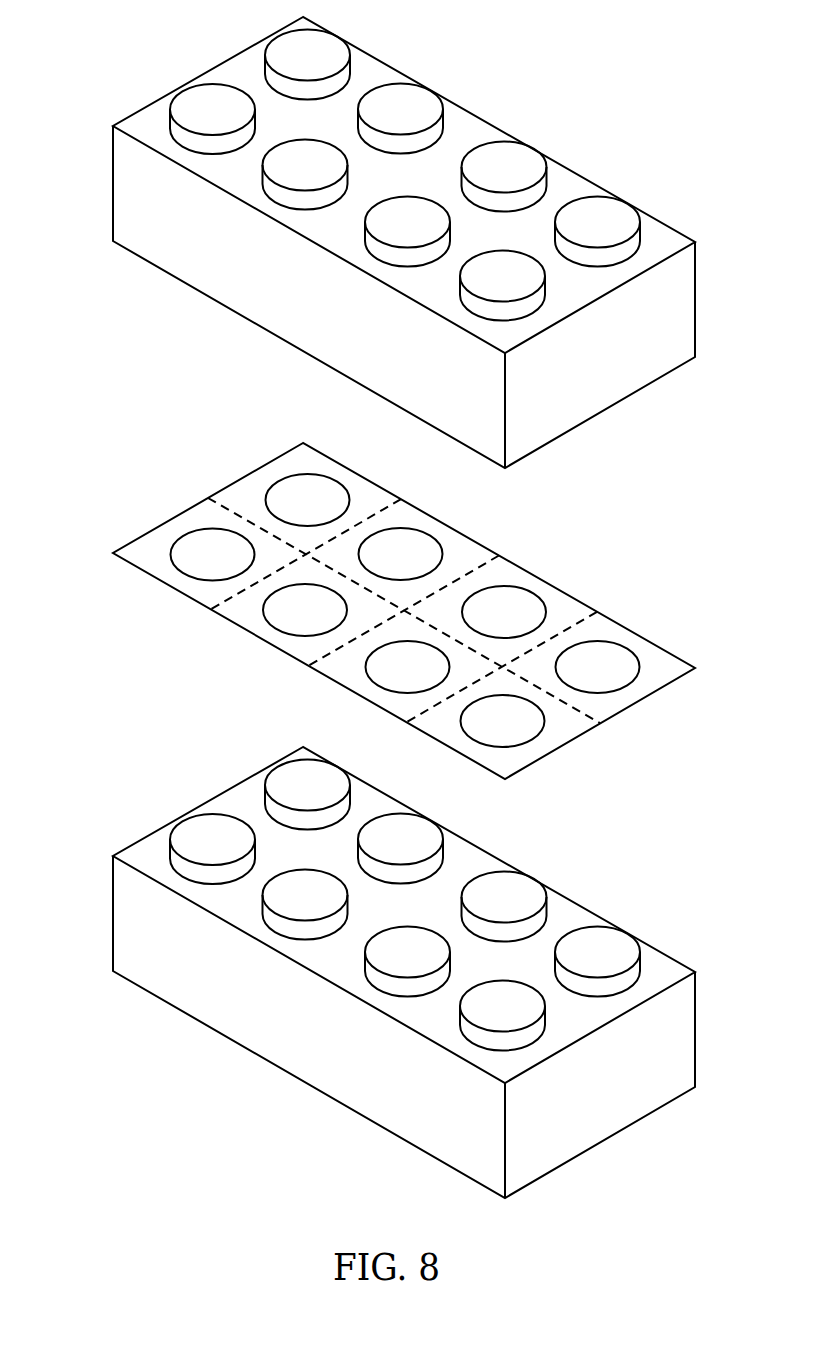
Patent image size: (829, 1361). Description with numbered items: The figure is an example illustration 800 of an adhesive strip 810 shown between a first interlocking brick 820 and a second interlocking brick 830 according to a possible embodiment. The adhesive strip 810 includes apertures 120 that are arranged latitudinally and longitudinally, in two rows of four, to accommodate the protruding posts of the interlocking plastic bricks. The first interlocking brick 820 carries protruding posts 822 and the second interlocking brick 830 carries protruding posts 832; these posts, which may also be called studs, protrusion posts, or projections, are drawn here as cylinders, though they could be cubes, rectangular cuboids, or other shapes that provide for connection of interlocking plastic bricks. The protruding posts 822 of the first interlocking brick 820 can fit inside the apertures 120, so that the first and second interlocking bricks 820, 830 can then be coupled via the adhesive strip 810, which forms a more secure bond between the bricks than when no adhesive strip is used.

The example illustration 800 is at (680, 115).
The second interlocking brick 830 is at (112, 185).
The protruding posts 832 is at (318, 52).
The adhesive strip 810 is at (188, 510).
The apertures 120 is at (318, 490).
The first interlocking brick 820 is at (112, 915).
The protruding posts 822 is at (318, 782).